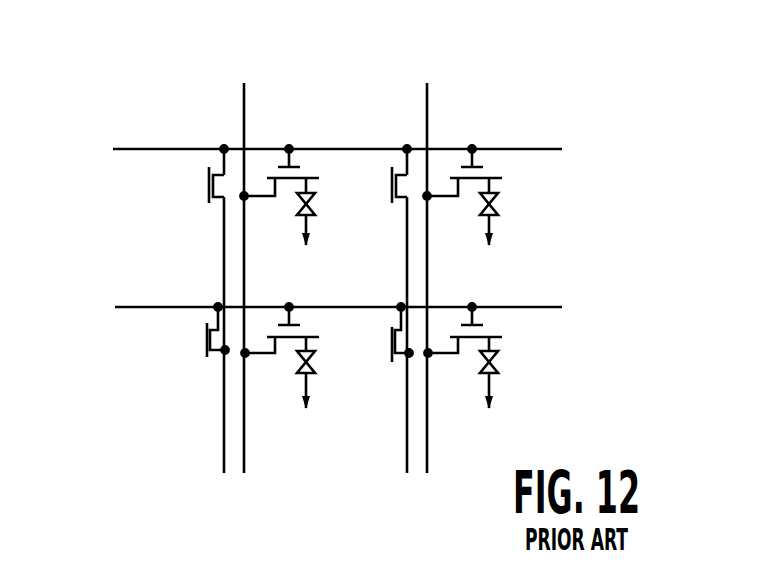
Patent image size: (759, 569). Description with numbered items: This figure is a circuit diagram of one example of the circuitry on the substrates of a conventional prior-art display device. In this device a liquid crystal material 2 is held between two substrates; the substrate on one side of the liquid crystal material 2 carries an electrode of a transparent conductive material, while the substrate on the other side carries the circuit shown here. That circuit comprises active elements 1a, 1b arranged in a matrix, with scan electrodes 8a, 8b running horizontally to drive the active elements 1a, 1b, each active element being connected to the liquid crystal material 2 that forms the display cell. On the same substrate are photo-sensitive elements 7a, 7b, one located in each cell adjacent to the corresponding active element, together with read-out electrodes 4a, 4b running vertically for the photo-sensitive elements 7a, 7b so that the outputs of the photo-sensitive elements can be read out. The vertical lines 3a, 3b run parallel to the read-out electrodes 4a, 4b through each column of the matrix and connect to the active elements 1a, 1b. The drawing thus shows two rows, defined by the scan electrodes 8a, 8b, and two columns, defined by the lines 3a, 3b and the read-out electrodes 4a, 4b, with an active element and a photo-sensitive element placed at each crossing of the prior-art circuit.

The active element 1a is at (305, 168).
The active element 1b is at (490, 170).
The liquid crystal material 2 is at (312, 207).
The signal line 3a is at (242, 101).
The signal line 3b is at (427, 103).
The read-out electrode 4a is at (226, 458).
The read-out electrode 4b is at (408, 436).
The photo-sensitive element 7a is at (193, 186).
The photo-sensitive element 7b is at (191, 349).
The scan electrode 8a is at (140, 148).
The scan electrode 8b is at (135, 308).